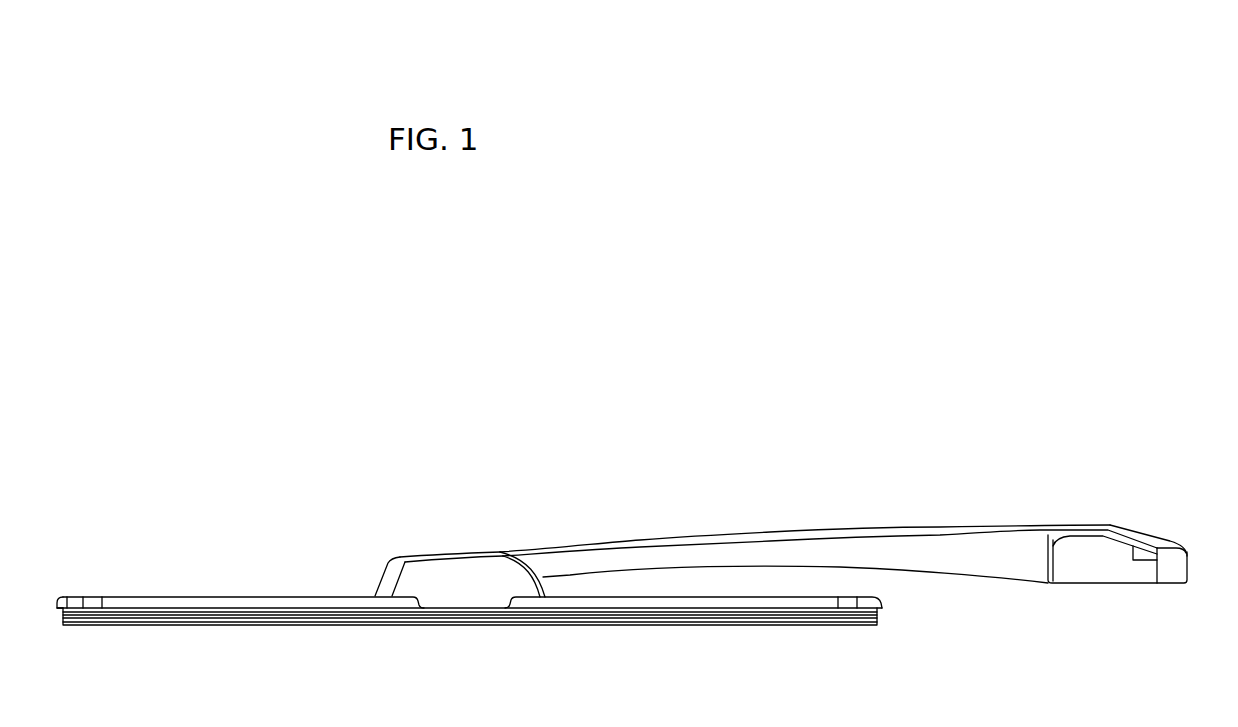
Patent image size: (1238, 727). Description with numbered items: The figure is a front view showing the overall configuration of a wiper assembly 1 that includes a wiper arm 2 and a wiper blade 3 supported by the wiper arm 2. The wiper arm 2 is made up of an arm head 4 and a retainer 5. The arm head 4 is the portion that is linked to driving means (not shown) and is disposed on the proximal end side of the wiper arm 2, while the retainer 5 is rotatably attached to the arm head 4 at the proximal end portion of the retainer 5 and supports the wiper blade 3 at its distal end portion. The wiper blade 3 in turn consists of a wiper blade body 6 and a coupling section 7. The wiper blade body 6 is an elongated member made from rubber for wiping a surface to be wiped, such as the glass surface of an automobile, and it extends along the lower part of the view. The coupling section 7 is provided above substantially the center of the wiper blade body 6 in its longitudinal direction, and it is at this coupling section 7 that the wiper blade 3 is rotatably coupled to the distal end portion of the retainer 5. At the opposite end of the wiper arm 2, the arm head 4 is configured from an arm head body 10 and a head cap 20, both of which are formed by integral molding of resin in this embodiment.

The wiper assembly 1 is at (718, 412).
The wiper arm 2 is at (922, 527).
The wiper blade 3 is at (292, 597).
The arm head 4 is at (1118, 525).
The retainer 5 is at (768, 532).
The wiper blade body 6 is at (167, 597).
The coupling section 7 is at (392, 561).
The arm head body 10 is at (1100, 567).
The head cap 20 is at (1162, 540).